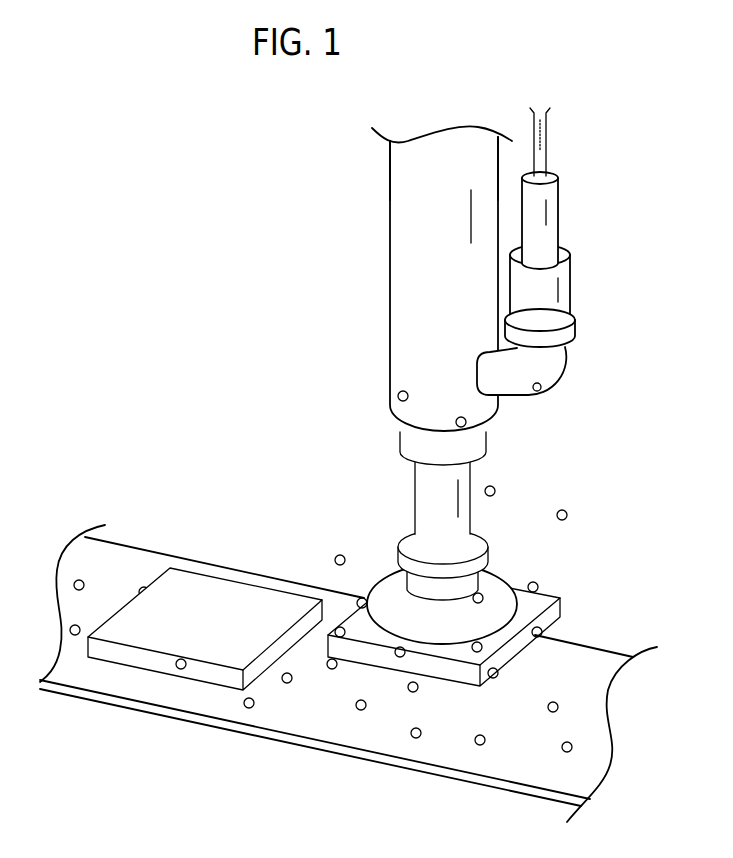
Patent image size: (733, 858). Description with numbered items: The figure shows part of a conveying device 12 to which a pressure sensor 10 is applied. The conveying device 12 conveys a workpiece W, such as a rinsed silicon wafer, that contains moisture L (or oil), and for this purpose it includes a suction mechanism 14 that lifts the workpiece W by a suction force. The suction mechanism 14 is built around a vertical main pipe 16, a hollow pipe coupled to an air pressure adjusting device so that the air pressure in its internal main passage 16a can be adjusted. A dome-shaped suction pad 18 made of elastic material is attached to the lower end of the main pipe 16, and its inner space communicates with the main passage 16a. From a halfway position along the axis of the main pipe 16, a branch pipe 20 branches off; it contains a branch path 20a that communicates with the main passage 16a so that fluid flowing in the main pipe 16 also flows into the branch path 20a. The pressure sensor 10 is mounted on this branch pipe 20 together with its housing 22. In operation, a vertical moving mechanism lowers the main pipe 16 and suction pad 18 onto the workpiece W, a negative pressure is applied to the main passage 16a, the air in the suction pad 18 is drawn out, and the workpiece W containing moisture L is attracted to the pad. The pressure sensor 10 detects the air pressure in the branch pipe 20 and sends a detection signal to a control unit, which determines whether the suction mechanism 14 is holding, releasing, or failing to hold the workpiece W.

The pressure sensor 10 is at (567, 276).
The conveying device 12 is at (157, 225).
The suction mechanism 14 is at (376, 184).
The main pipe 16 is at (408, 309).
The main passage 16a is at (444, 258).
The suction pad 18 is at (497, 580).
The branch pipe 20 is at (512, 380).
The branch path 20a is at (543, 364).
The supply cylinder 22 is at (570, 285).
The workpiece W is at (221, 594).
The moisture L is at (340, 555).